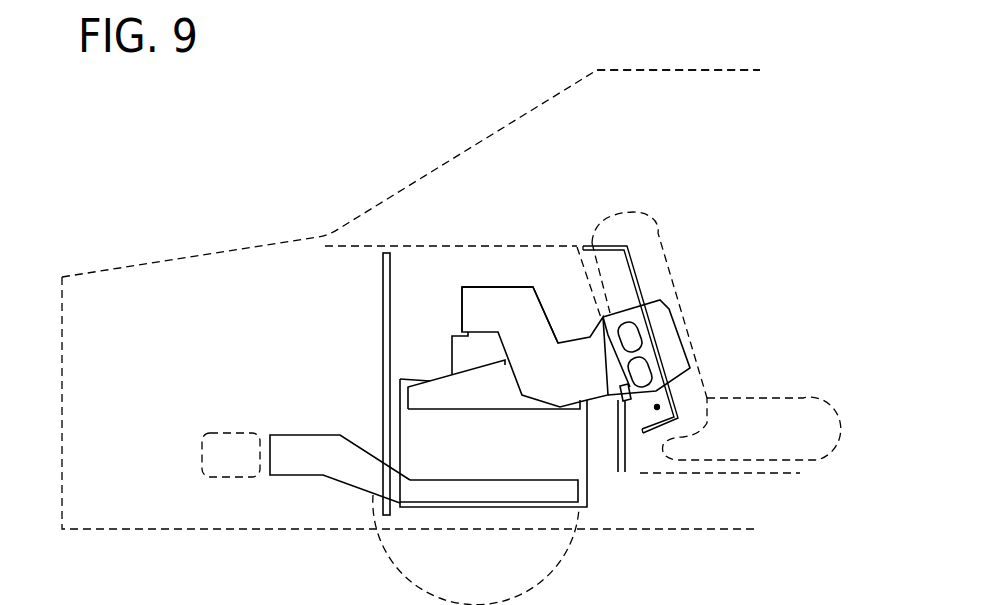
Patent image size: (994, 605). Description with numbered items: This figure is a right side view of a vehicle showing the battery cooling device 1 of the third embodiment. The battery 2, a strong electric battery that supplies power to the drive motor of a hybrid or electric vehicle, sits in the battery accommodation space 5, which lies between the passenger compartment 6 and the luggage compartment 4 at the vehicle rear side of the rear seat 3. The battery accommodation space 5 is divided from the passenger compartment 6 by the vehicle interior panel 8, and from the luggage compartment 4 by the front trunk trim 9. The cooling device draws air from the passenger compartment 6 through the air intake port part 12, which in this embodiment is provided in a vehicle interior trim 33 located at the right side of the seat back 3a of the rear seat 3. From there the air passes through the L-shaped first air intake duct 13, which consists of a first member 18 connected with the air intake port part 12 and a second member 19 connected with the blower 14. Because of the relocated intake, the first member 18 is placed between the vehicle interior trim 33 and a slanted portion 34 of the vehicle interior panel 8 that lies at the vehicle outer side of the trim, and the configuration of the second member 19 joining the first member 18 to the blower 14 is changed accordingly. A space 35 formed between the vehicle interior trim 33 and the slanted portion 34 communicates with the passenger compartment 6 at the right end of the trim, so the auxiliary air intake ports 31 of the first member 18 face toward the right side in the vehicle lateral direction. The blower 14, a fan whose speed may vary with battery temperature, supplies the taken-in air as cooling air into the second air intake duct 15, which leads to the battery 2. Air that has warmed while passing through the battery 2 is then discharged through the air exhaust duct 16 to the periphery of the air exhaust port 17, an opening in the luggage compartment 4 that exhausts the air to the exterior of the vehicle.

The battery cooling device 1 is at (452, 321).
The battery 2 is at (588, 492).
The rear seat 3 is at (797, 398).
The seat back 3a is at (660, 225).
The luggage compartment 4 is at (194, 313).
The battery accommodation space 5 is at (418, 302).
The passenger compartment 6 is at (726, 145).
The vehicle interior panel 8 is at (727, 473).
The front trunk trim 9 is at (383, 268).
The air intake port part 12 is at (660, 300).
The first air intake duct 13 is at (512, 286).
The blower 14 is at (455, 350).
The second air intake duct 15 is at (410, 399).
The air exhaust duct 16 is at (303, 435).
The air exhaust port 17 is at (237, 433).
The first member 18 is at (620, 472).
The second member 19 is at (487, 287).
The auxiliary air intake ports 31 is at (637, 334).
The vehicle interior trim 33 is at (640, 278).
The slanted portion 34 is at (624, 405).
The space 35 is at (657, 407).